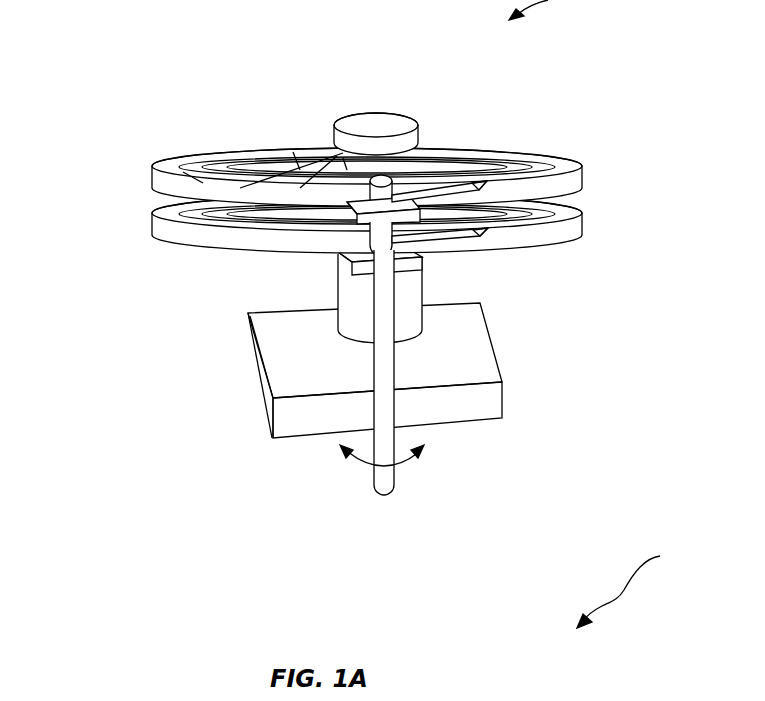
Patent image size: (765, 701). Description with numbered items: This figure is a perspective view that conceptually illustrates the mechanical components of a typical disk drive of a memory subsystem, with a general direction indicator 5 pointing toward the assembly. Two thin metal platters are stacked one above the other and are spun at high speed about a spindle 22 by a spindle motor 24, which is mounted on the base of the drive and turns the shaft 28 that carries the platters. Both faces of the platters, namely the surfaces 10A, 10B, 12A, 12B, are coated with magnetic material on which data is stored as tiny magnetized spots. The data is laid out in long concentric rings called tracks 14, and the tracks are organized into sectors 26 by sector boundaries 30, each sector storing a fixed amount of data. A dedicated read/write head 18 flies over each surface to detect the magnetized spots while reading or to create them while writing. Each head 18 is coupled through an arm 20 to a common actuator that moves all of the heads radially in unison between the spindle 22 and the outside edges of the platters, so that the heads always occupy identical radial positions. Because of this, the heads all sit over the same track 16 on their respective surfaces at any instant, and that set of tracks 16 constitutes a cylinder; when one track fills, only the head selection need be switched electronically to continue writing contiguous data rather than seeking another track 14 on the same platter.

The viewing direction arrow 5 is at (628, 588).
The platter surface 10A is at (349, 144).
The platter surface 10B is at (380, 181).
The platter surface 12A is at (320, 179).
The platter surface 12B is at (316, 224).
The tracks 14 is at (410, 128).
The track 16 is at (415, 167).
The read/write head 18 is at (481, 229).
The arm 20 is at (483, 243).
The spindle 22 is at (303, 295).
The spindle motor 24 is at (432, 370).
The sector 26 is at (215, 156).
The actuator shaft 28 is at (282, 372).
The sector boundaries 30 is at (243, 135).